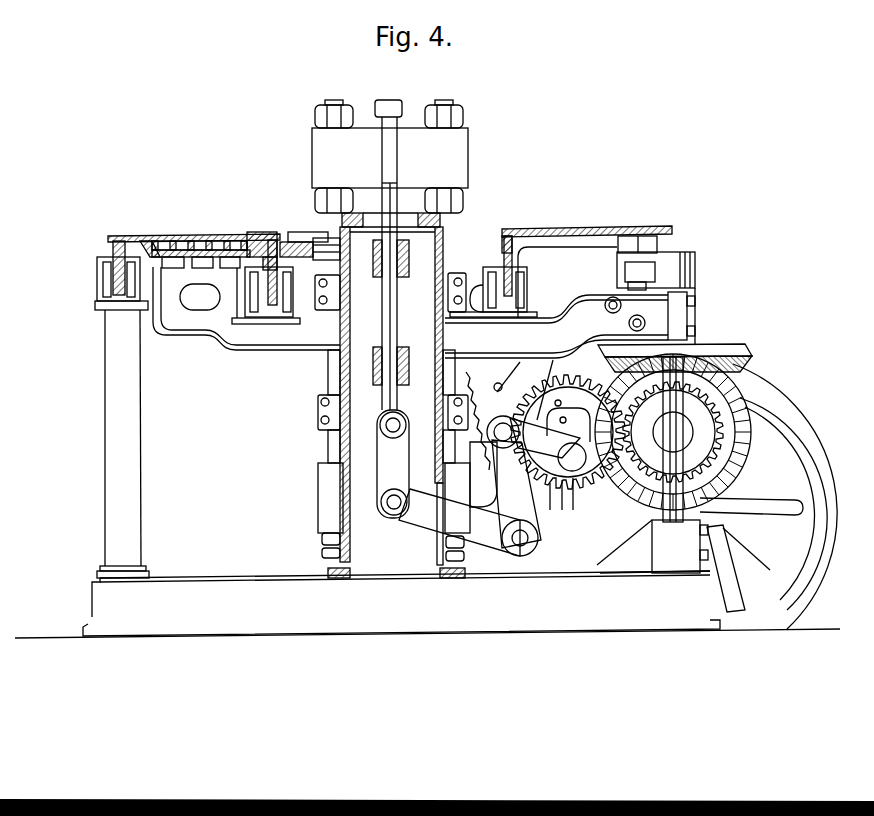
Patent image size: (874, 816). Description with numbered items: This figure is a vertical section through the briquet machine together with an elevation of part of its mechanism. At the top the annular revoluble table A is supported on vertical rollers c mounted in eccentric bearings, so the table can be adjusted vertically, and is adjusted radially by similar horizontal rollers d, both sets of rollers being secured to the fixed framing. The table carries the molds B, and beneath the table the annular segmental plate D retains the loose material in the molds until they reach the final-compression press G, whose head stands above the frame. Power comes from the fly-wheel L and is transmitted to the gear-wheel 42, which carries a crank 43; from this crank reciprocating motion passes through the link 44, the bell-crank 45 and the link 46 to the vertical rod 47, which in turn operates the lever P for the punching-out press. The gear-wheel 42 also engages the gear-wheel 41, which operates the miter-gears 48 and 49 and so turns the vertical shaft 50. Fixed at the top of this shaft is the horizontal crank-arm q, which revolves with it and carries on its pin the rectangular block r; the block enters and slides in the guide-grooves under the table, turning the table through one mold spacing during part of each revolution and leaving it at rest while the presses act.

The annular revoluble table A is at (132, 236).
The molds B is at (190, 240).
The vertical rollers c is at (100, 256).
The horizontal rollers d is at (292, 245).
The annular segmental plate D is at (222, 257).
The final-compression press G is at (390, 156).
The rod 47 is at (396, 322).
The link 46 is at (448, 483).
The bell-crank 45 is at (509, 458).
The link 44 is at (533, 437).
The crank 43 is at (578, 458).
The gear-wheel 42 is at (590, 477).
The lever P is at (560, 433).
The gear-wheel 41 is at (652, 455).
The vertical shaft 50 is at (668, 400).
The miter-gear 48 is at (735, 394).
The miter-gear 49 is at (740, 352).
The fly-wheel L is at (813, 472).
The horizontal crank-arm q is at (660, 262).
The rectangular block r is at (632, 245).